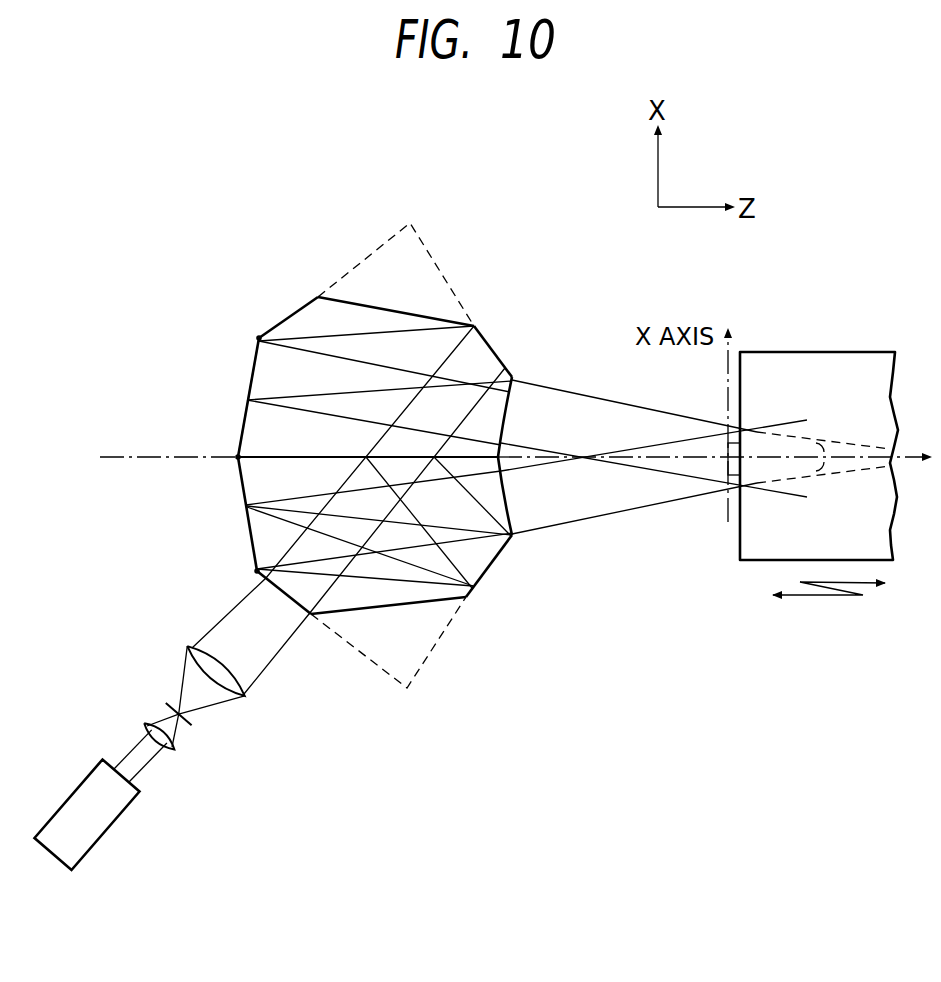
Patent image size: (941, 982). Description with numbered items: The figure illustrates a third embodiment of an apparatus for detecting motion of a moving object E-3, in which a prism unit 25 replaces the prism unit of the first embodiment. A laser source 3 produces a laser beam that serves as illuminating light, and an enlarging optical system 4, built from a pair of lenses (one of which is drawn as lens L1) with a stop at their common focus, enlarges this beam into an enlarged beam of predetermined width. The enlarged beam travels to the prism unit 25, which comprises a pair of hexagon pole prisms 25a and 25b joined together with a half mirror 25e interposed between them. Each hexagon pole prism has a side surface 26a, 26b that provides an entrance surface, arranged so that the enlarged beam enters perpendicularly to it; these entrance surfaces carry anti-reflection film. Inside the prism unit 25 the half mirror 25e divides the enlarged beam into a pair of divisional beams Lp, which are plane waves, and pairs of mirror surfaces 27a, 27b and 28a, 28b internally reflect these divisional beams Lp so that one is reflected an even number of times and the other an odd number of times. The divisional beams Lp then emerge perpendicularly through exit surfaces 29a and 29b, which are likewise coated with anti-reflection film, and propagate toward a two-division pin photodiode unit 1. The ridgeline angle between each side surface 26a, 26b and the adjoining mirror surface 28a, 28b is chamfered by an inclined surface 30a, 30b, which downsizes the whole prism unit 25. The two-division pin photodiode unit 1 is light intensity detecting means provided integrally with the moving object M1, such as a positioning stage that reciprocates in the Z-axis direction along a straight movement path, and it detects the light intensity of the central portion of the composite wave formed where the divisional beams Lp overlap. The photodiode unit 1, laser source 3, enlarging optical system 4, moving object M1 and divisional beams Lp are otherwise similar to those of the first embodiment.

The apparatus for detecting motion of a moving object E-3 is at (245, 203).
The prism unit 25 is at (348, 230).
The hexagon pole prism 25a is at (258, 385).
The hexagon pole prism 25b is at (250, 487).
The half mirror 25e is at (260, 456).
The side surface 26a is at (293, 311).
The side surface 26b is at (285, 598).
The mirror surface 27a is at (253, 353).
The mirror surface 27b is at (255, 565).
The mirror surface 28a is at (488, 340).
The mirror surface 28b is at (483, 577).
The exit surface 29a is at (513, 412).
The exit surface 29b is at (515, 503).
The inclined surface 30a is at (428, 307).
The inclined surface 30b is at (420, 607).
The two-division pin photodiode unit 1 is at (746, 446).
The moving object M1 is at (757, 552).
The laser source 3 is at (113, 823).
The enlarging optical system 4 is at (190, 742).
The lens L1 is at (147, 764).
The divisional beams Lp is at (615, 415).